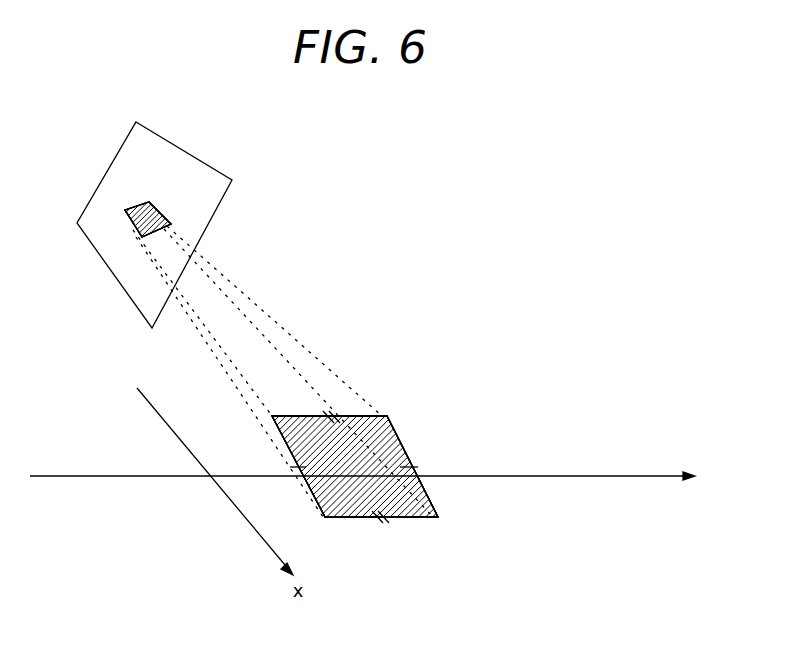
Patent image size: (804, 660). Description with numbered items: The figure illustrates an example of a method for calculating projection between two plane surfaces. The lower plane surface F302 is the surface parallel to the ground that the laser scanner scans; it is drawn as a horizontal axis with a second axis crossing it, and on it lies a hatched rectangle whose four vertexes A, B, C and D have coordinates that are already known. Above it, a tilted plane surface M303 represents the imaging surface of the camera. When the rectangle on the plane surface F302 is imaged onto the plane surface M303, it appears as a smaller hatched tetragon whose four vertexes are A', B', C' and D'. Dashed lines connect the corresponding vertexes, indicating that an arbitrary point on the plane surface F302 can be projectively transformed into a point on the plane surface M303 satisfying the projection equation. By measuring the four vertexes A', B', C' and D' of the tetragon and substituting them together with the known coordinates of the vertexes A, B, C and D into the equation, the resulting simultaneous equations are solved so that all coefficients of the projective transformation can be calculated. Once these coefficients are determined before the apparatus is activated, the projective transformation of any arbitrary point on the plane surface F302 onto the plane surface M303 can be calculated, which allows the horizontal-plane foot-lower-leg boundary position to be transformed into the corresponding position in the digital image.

The plane surface M303 is at (178, 163).
The plane surface F302 is at (568, 450).
The vertex of rectangle ABCD A is at (352, 458).
The vertex of rectangle ABCD B is at (363, 480).
The vertex of rectangle ABCD C is at (355, 480).
The vertex of rectangle ABCD D is at (354, 455).
The vertex of tetragon A'B'C'D' A' is at (147, 208).
The vertex of tetragon A'B'C'D' B' is at (165, 219).
The vertex of tetragon A'B'C'D' C' is at (141, 231).
The vertex of tetragon A'B'C' D' is at (135, 219).